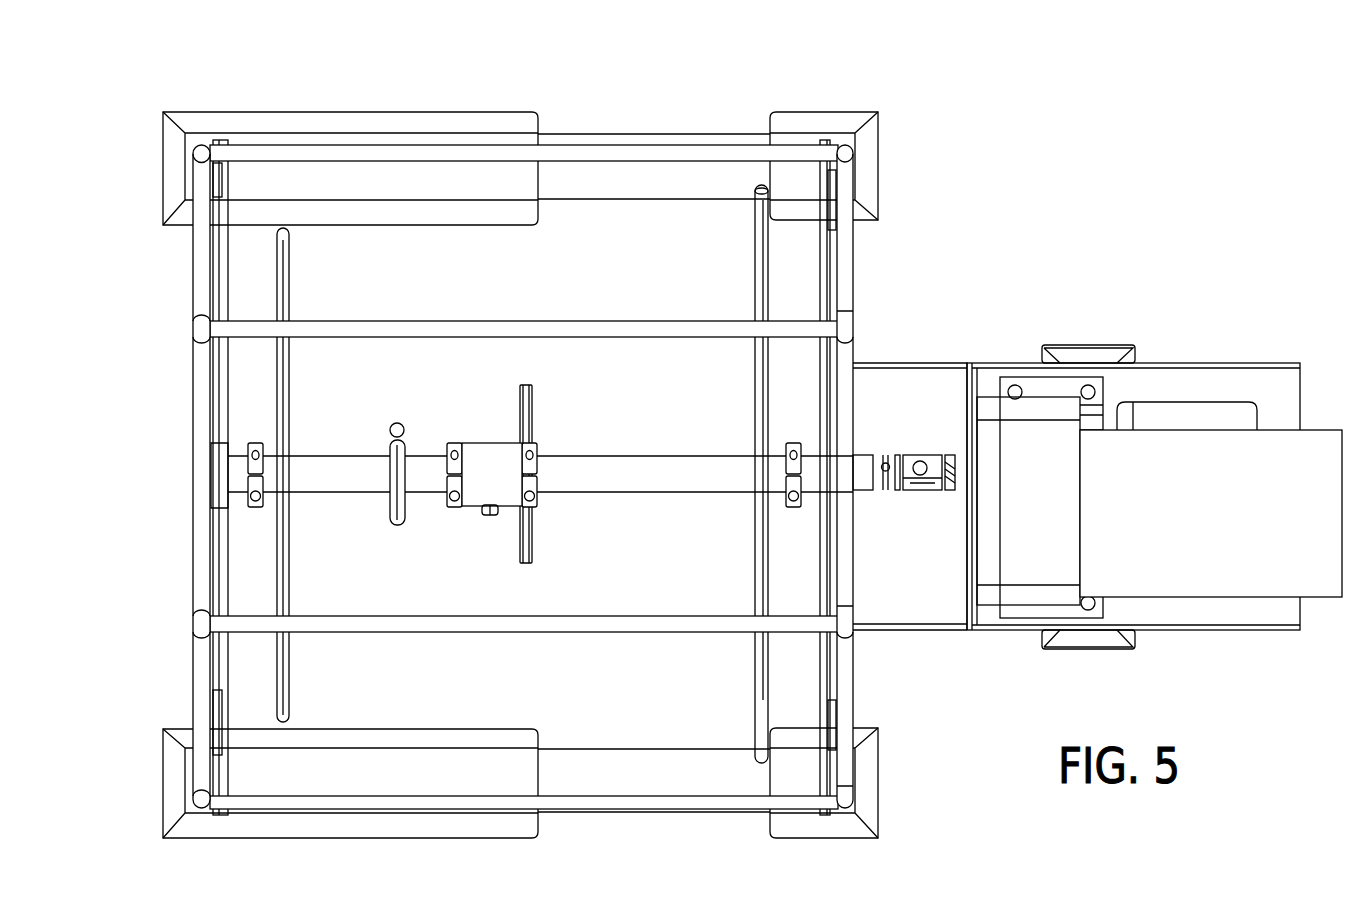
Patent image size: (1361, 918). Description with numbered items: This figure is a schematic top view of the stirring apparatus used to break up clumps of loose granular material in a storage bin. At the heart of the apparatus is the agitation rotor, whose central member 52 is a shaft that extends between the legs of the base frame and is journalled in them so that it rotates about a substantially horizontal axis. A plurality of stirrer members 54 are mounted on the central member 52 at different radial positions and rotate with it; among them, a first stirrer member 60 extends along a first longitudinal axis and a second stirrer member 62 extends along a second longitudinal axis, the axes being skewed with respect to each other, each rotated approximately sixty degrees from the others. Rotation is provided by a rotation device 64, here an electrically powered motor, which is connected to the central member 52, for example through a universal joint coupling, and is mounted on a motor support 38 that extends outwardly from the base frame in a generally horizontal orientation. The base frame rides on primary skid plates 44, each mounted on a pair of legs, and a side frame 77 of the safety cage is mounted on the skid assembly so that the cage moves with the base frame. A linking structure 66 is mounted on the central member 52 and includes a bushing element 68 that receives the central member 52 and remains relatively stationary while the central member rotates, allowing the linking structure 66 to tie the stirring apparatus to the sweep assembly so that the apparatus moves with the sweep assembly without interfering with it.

The primary skid plate 44 is at (493, 738).
The side frame 77 is at (845, 293).
The stirrer member 54 is at (288, 413).
The second stirrer member 62 is at (757, 277).
The central member 52 is at (575, 477).
The linking structure 66 is at (508, 428).
The first stirrer member 60 is at (530, 392).
The bushing element 68 is at (478, 487).
The motor support 38 is at (923, 368).
The rotation device 64 is at (1168, 453).